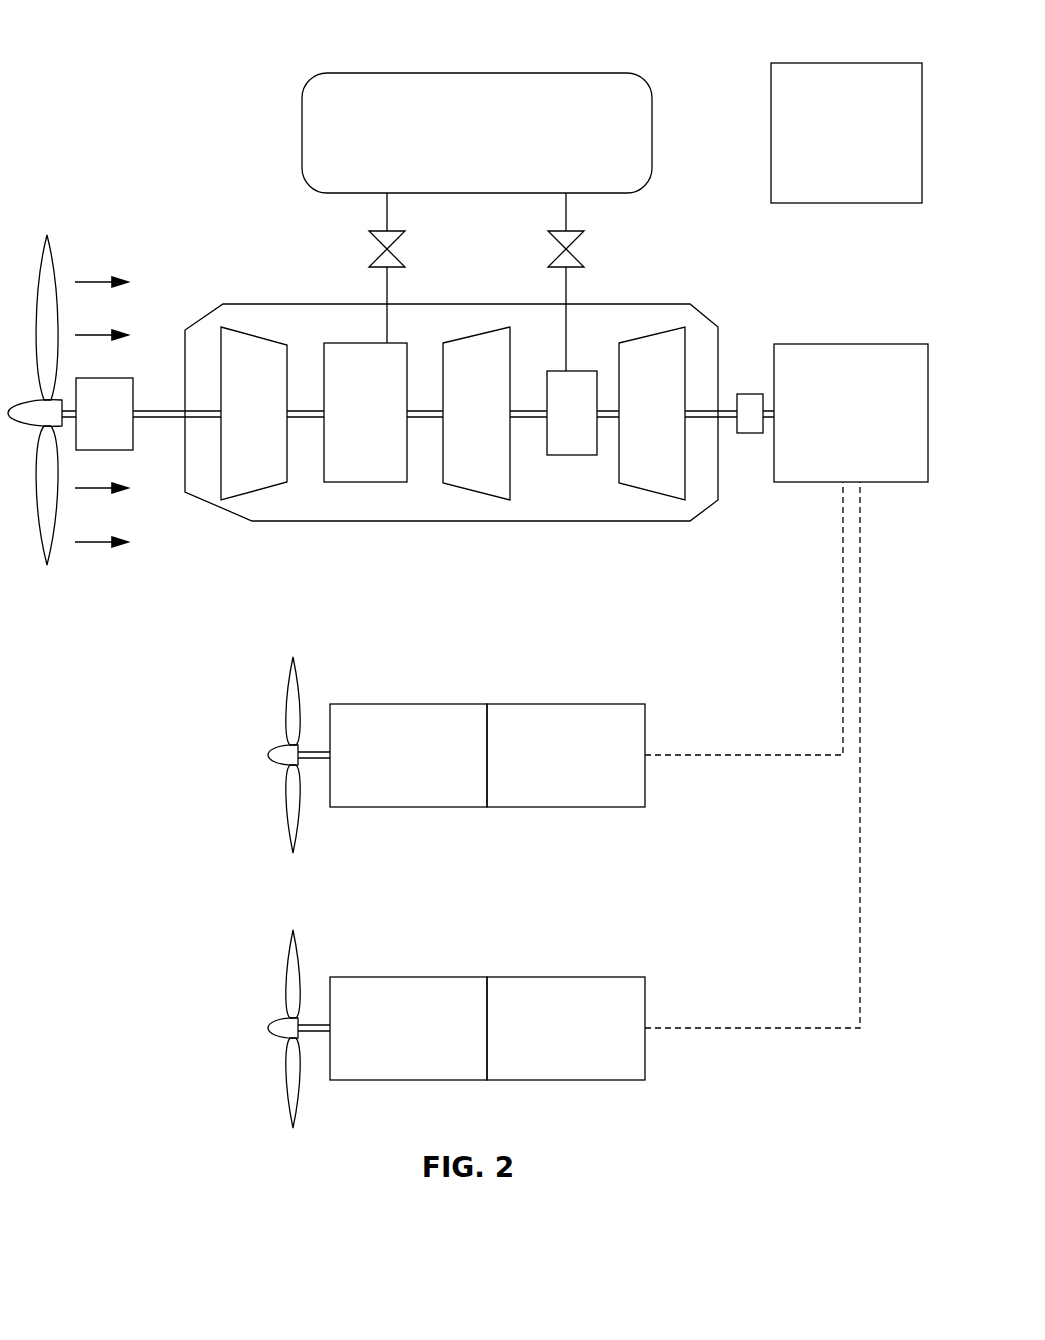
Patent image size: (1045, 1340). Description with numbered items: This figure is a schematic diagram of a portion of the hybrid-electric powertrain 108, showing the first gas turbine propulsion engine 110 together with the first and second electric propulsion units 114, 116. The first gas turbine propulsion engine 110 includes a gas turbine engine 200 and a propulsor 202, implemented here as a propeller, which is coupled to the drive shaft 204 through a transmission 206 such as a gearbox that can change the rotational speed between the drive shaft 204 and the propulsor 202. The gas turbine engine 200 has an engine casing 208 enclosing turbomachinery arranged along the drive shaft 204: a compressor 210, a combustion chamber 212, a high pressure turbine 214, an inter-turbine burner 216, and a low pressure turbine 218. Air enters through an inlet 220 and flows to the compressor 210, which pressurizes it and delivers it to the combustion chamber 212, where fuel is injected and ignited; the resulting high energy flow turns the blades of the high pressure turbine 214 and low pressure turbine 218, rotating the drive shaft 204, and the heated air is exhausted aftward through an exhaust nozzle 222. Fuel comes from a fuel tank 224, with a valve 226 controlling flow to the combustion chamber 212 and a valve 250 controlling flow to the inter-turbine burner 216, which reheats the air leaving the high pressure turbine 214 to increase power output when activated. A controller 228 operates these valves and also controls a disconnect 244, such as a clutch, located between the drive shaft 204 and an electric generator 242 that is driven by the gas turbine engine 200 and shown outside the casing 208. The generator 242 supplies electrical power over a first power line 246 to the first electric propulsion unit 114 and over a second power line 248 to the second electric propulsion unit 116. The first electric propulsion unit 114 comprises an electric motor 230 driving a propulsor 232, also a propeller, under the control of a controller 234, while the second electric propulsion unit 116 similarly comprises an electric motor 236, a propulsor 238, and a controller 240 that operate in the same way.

The hybrid-electric powertrain 108 is at (110, 33).
The first gas turbine propulsion engine 110 is at (160, 178).
The first electric propulsion unit 114 is at (198, 670).
The second electric propulsion unit 116 is at (198, 969).
The gas turbine engine 200 is at (218, 300).
The propulsor 202 is at (52, 268).
The drive shaft 204 is at (178, 408).
The transmission 206 is at (85, 377).
The engine casing 208 is at (238, 303).
The compressor 210 is at (250, 358).
The combustion chamber 212 is at (345, 357).
The high pressure turbine 214 is at (458, 358).
The inter-turbine burner 216 is at (583, 384).
The low pressure turbine 218 is at (662, 350).
The inlet 220 is at (182, 468).
The exhaust nozzle 222 is at (722, 494).
The fuel tank 224 is at (370, 72).
The valve 226 is at (382, 230).
The controller 228 is at (838, 62).
The electric motor 230 is at (398, 703).
The propulsor 232 is at (293, 664).
The controller 234 is at (555, 703).
The electric motor 236 is at (398, 976).
The propulsor 238 is at (293, 937).
The controller 240 is at (555, 976).
The electric generator 242 is at (841, 343).
The disconnect 244 is at (750, 393).
The first power line 246 is at (843, 705).
The second power line 248 is at (860, 940).
The valve 250 is at (561, 230).